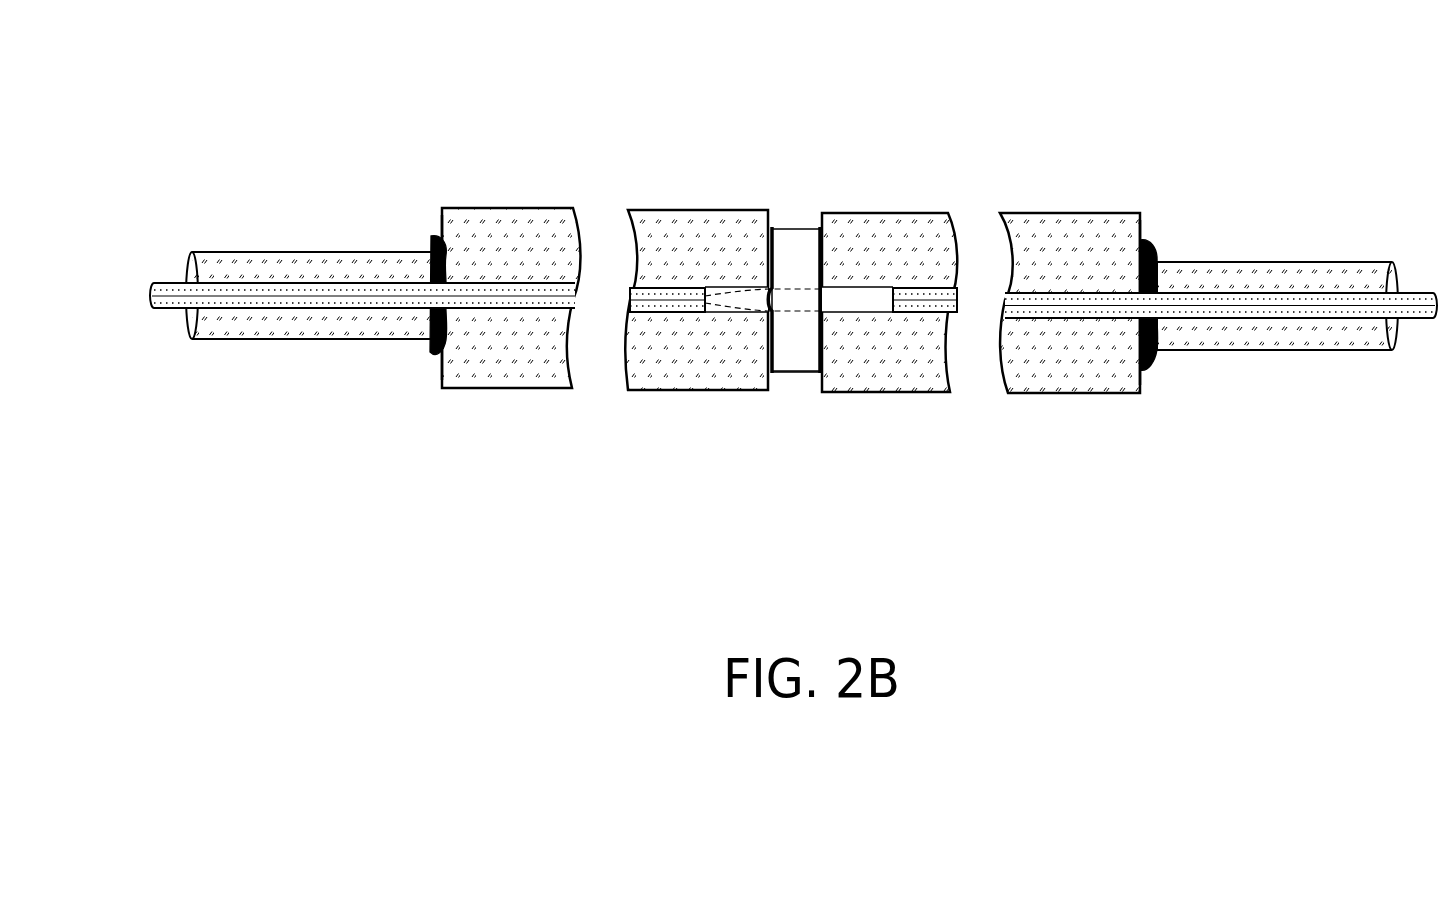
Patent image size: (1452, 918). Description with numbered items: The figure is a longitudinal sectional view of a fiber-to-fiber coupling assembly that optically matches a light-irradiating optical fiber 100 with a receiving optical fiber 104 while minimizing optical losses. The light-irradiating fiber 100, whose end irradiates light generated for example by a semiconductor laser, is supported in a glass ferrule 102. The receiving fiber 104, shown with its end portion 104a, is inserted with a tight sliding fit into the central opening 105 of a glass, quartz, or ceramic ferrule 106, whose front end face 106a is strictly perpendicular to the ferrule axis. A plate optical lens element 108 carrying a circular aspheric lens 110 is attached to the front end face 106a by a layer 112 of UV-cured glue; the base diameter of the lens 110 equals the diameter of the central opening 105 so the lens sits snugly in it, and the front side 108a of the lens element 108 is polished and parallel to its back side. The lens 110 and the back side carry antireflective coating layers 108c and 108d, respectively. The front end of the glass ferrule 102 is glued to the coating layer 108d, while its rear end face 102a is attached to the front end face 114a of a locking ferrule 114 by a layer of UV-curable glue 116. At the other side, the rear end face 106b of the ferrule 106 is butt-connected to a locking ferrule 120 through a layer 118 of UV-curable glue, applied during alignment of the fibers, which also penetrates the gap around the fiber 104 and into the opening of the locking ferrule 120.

The light-irradiating optical fiber 100 is at (1320, 293).
The glass ferrule 102 is at (907, 212).
The rear end face of the ferrule 102a is at (1140, 375).
The optical fiber 104 is at (277, 308).
The optical fiber end portion 104a is at (707, 306).
The central opening 105 is at (712, 284).
The ferrule 106 is at (480, 388).
The front end face of the ferrule 106a is at (771, 380).
The rear end face of the ferrule 106b is at (443, 222).
The plate optical lens element 108 is at (810, 186).
The front side of the lens element 108a is at (815, 358).
The antireflective coating layer 108c is at (767, 288).
The antireflective coating layer 108d is at (817, 243).
The circular aspheric lens 110 is at (748, 312).
The layer of UV-cured glue 112 is at (770, 378).
The locking ferrule 114 is at (1321, 350).
The front end face of the locking ferrule 114a is at (1155, 278).
The layer of UV-curable glue 116 is at (1148, 245).
The layer of UV-curable glue 118 is at (435, 240).
The locking ferrule 120 is at (245, 252).